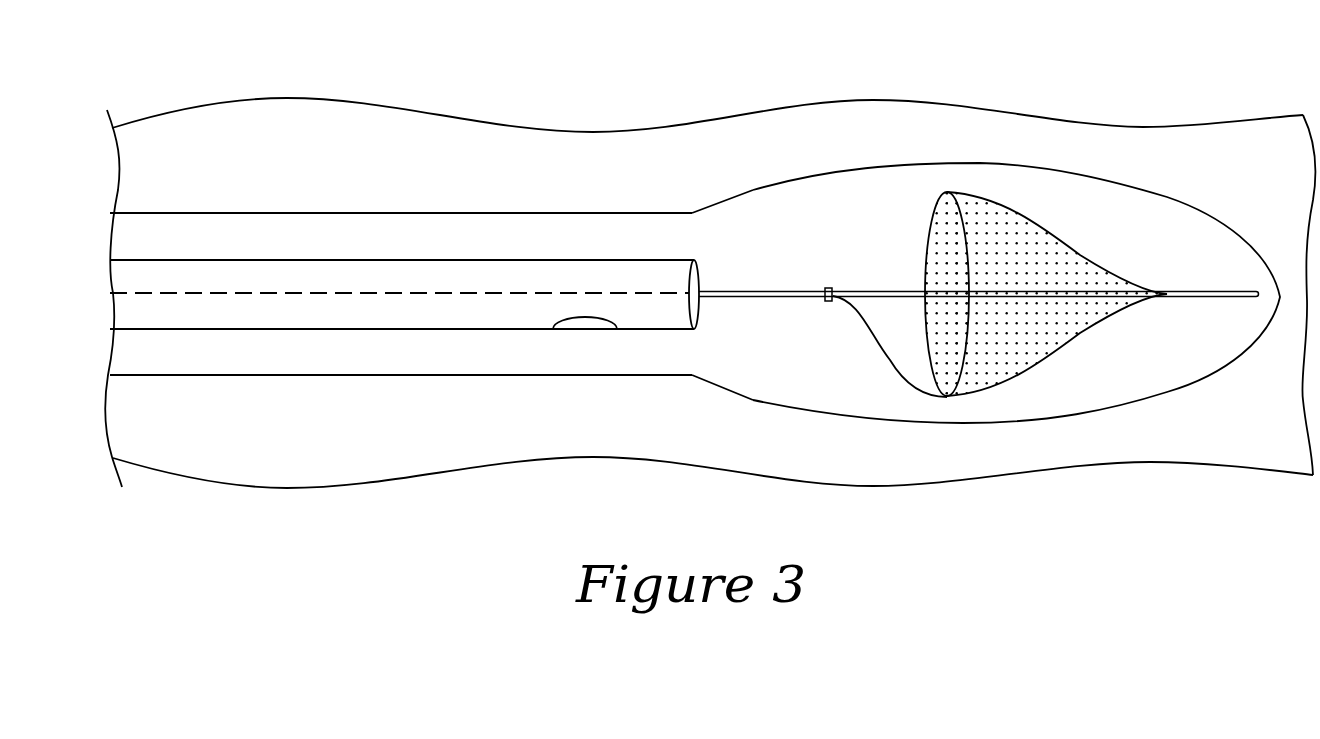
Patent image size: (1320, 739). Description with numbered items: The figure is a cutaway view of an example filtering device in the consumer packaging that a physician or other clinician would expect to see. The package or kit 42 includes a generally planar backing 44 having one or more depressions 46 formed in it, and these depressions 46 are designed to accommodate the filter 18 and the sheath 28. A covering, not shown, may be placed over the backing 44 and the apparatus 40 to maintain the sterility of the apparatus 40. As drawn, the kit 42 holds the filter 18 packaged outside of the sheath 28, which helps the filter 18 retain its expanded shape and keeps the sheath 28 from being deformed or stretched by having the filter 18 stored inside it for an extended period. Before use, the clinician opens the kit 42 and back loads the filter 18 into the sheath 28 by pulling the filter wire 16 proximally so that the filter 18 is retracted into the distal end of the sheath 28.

The filter wire 16 is at (783, 297).
The filter 18 is at (994, 192).
The sheath 28 is at (237, 252).
The apparatus 40 is at (740, 282).
The kit 42 is at (783, 103).
The backing 44 is at (1215, 150).
The depressions 46 is at (839, 219).